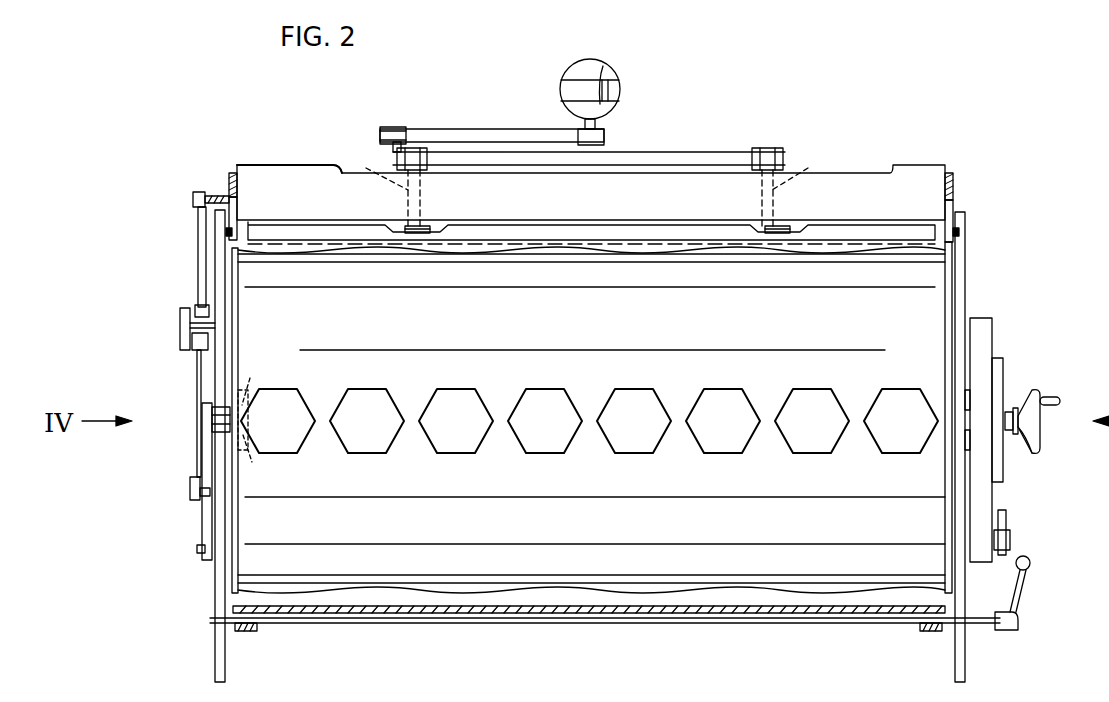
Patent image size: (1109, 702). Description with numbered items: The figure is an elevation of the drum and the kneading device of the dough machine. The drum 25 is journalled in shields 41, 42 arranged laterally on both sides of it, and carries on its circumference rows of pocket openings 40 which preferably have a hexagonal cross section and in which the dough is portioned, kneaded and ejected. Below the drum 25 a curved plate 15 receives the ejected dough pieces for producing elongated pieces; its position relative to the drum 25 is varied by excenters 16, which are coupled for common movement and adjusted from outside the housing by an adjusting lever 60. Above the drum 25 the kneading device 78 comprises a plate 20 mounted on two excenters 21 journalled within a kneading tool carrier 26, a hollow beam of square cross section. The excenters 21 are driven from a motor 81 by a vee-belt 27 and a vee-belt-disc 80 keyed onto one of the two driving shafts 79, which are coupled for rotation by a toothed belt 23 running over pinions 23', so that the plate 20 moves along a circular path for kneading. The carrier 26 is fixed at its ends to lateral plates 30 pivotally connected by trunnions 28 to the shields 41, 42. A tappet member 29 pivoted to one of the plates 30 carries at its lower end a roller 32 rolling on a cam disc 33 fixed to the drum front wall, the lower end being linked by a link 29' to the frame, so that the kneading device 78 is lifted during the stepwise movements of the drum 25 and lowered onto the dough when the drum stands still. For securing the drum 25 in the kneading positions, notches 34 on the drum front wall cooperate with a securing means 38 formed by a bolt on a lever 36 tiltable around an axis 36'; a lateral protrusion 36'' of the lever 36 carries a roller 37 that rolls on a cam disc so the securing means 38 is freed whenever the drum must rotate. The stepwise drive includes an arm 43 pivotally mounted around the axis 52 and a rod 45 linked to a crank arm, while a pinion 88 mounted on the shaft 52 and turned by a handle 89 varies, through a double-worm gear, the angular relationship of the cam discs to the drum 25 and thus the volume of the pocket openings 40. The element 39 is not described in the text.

The curved plate 15 is at (302, 624).
The excenters 16 is at (246, 632).
The plate 20 is at (516, 244).
The excenters 21 is at (408, 226).
The toothed belt 23 is at (589, 144).
The pinions 23' is at (583, 171).
The drum 25 is at (600, 530).
The kneading tool carrier 26 is at (878, 190).
The vee-belt 27 is at (490, 129).
The trunnions 28 is at (226, 232).
The tappet member 29 is at (183, 262).
The link 29' is at (175, 326).
The lateral plates 30 is at (233, 172).
The roller 32 is at (192, 344).
The cam disc 33 is at (197, 387).
The notches 34 is at (252, 402).
The lever 36 is at (178, 481).
The axis 36' is at (174, 550).
The lateral protrusion 36'' is at (177, 502).
The roller 37 is at (190, 485).
The securing means 38 is at (250, 459).
The bolt 39 is at (215, 196).
The pocket openings 40 is at (797, 410).
The shield 41 is at (225, 286).
The shield 42 is at (965, 284).
The arm 43 is at (982, 562).
The rod 45 is at (1006, 534).
The axis 52 is at (212, 415).
The adjusting lever 60 is at (1022, 590).
The kneading device 78 is at (290, 168).
The driving shafts 79 is at (589, 171).
The vee-belt-disc 80 is at (395, 127).
The motor 81 is at (615, 93).
The pinion 88 is at (1010, 412).
The handle 89 is at (1058, 398).